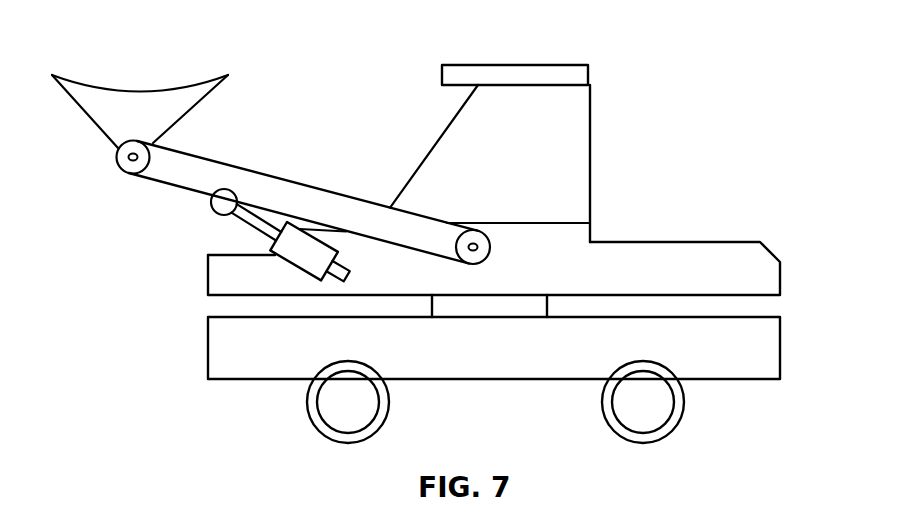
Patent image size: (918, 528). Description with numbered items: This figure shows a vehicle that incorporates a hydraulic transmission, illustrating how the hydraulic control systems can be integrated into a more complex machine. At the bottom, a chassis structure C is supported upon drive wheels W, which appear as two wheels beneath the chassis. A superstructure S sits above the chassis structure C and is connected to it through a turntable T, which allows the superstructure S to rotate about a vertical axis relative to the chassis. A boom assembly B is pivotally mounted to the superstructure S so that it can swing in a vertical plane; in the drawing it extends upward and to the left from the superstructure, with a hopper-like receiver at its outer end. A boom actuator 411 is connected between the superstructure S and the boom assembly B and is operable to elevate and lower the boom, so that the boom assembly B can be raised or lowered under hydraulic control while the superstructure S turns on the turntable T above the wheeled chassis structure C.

The boom assembly B is at (240, 177).
The boom actuator 411 is at (252, 228).
The superstructure S is at (714, 250).
The turntable T is at (483, 308).
The chassis structure C is at (222, 338).
The drive wheels W is at (317, 415).